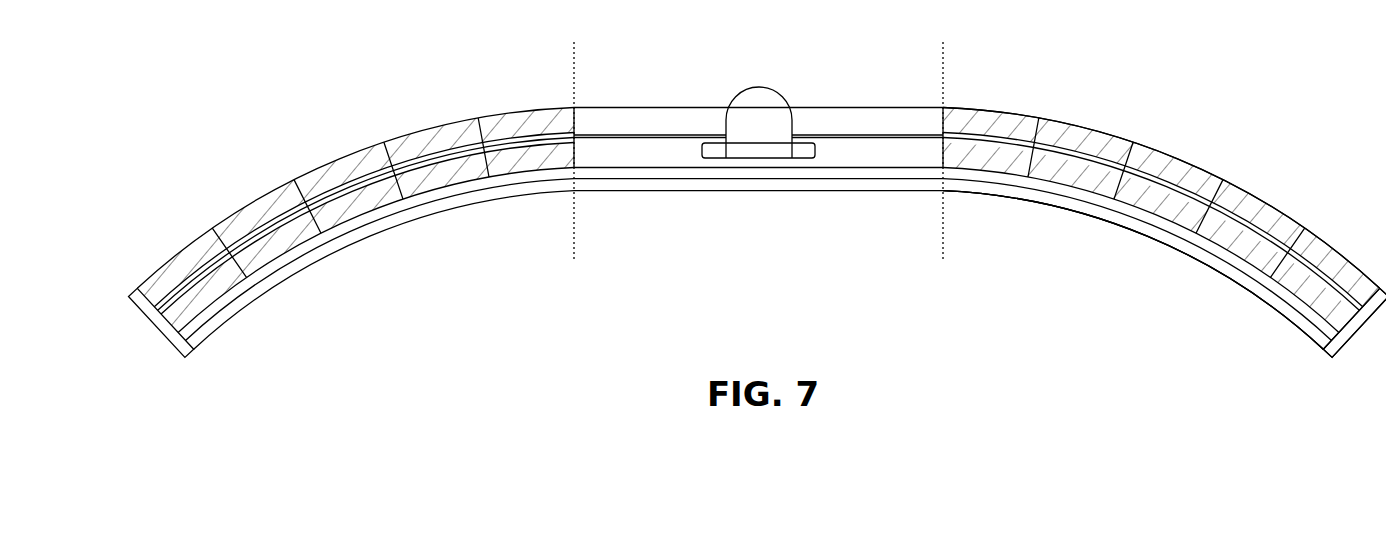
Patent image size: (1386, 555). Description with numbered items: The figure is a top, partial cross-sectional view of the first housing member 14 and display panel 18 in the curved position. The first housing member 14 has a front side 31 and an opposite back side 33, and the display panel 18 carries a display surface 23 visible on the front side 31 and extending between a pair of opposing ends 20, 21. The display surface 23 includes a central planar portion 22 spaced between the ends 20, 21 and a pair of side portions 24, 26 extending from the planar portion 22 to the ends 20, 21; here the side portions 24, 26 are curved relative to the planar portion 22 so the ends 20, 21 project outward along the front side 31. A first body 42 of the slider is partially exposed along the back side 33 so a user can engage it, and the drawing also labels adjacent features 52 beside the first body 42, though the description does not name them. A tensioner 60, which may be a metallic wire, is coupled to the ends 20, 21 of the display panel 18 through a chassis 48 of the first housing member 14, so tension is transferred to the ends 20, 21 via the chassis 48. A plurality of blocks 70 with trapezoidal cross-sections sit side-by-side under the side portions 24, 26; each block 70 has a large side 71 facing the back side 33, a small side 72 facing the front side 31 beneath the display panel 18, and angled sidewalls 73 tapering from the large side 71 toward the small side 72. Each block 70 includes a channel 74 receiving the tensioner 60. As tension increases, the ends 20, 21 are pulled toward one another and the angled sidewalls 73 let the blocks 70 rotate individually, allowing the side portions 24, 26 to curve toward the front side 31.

The first housing member 14 is at (290, 147).
The display panel 18 is at (1192, 263).
The end 20 is at (196, 350).
The end 21 is at (1320, 347).
The central planar portion 22 is at (763, 191).
The display surface 23 is at (1078, 213).
The side portion 24 is at (530, 194).
The side portion 26 is at (1000, 196).
The front side 31 is at (635, 213).
The back side 33 is at (626, 84).
The first body 42 is at (782, 96).
The chassis 48 is at (148, 318).
The mounting base 52 is at (713, 160).
The tensioner 60 is at (880, 135).
The block 70 is at (170, 257).
The large side 71 is at (1178, 158).
The small side 72 is at (1142, 217).
The angled sidewall 73 is at (1131, 156).
The channel 74 is at (450, 160).